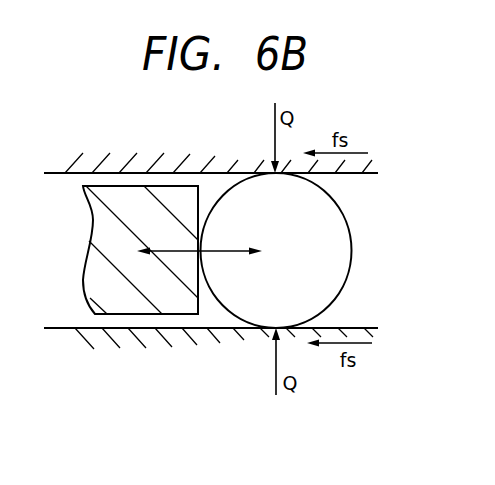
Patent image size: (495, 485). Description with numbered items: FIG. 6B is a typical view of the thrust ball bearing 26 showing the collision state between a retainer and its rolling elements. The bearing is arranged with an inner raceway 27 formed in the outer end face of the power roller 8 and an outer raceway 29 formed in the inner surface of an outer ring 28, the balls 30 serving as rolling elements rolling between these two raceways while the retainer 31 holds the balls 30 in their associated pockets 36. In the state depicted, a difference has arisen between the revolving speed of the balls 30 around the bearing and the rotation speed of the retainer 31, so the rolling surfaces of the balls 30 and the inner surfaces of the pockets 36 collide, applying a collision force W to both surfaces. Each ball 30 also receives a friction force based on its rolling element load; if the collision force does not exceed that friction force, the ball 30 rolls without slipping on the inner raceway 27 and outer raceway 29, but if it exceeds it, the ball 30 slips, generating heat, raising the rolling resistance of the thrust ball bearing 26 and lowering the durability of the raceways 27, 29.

The power roller 8 is at (237, 339).
The thrust ball bearing 26 is at (235, 282).
The inner raceway 27 is at (345, 328).
The outer ring 28 is at (175, 160).
The outer raceway 29 is at (340, 173).
The balls 30 is at (332, 253).
The retainer 31 is at (117, 293).
The pockets 36 is at (202, 292).